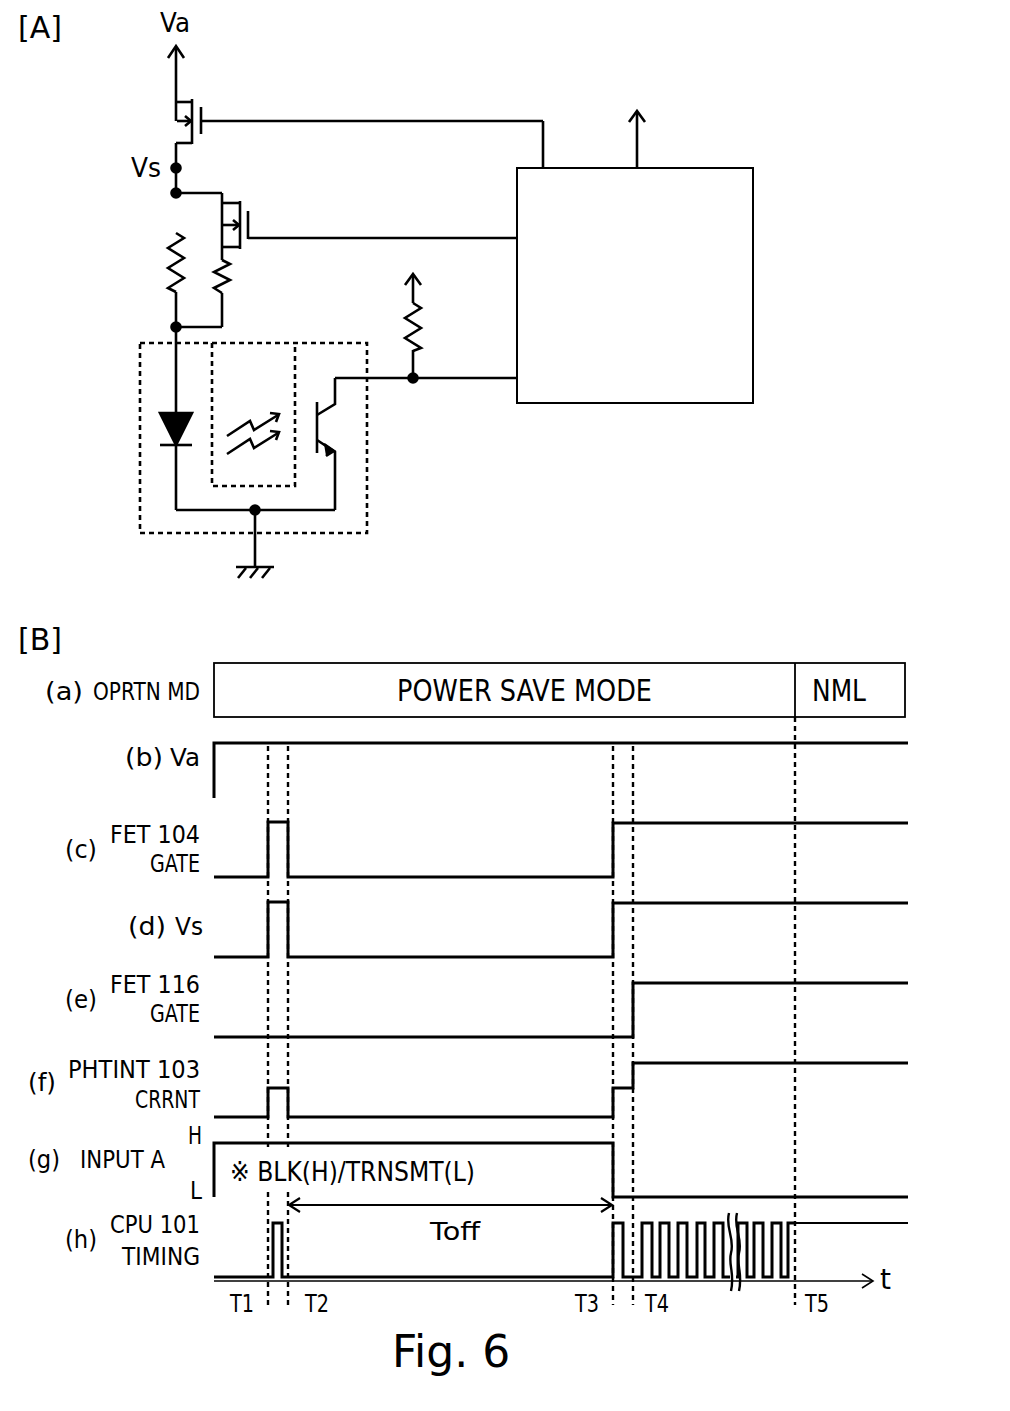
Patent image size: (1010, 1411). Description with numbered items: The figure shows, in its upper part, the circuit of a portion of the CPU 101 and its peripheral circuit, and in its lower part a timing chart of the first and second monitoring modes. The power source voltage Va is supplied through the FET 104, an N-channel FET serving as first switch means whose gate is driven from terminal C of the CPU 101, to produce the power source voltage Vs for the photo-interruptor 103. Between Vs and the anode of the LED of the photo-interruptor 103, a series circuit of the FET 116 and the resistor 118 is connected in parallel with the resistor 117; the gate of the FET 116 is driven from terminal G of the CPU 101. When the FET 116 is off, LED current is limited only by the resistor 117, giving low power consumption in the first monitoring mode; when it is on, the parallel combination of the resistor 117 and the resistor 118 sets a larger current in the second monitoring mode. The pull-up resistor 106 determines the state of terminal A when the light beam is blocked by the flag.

The CPU 101 is at (739, 166).
The photo-interruptor 103 is at (139, 418).
The FET 104 is at (170, 125).
The resistor 106 is at (402, 321).
The FET 116 is at (252, 225).
The resistor 117 is at (167, 259).
The resistor 118 is at (236, 296).